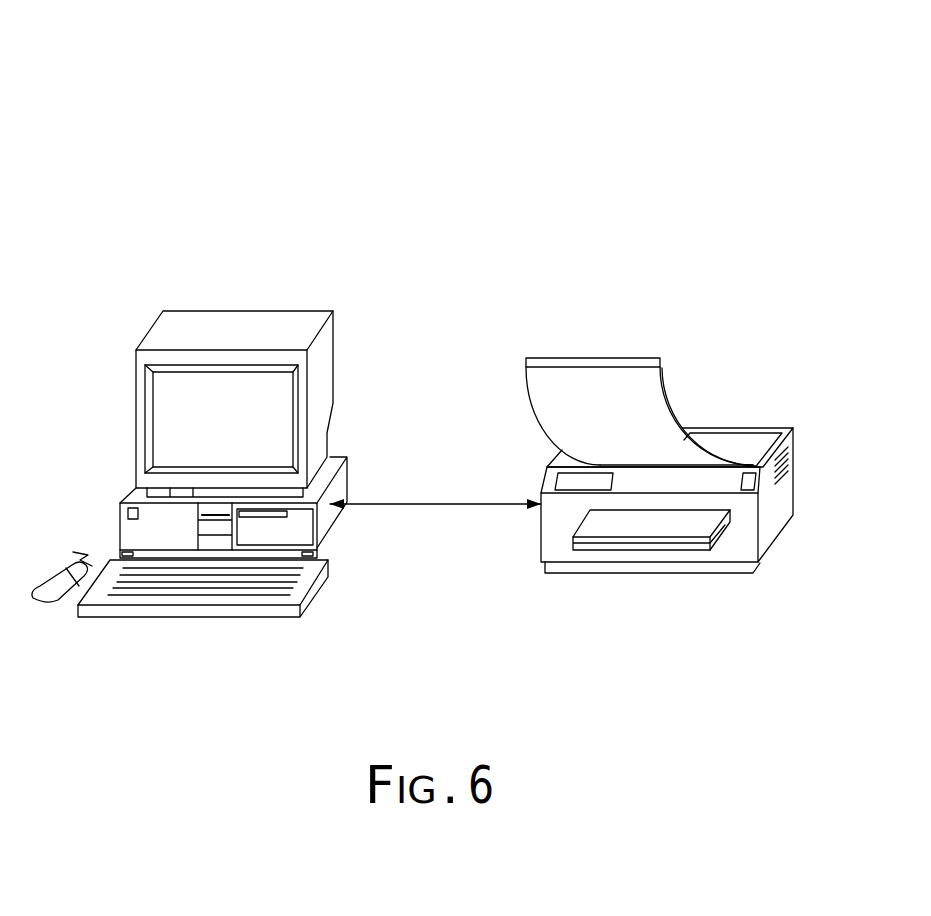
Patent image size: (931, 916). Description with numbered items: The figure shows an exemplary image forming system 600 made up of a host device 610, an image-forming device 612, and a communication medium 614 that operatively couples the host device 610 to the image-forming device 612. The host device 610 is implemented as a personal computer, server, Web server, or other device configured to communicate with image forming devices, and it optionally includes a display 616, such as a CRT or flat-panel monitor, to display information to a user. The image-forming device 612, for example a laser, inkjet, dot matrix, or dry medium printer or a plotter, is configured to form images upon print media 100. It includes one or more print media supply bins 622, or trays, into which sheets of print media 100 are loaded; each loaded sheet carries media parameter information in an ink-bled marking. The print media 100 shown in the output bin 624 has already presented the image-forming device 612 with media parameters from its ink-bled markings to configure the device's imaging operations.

The image forming system 600 is at (197, 68).
The host device 610 is at (120, 510).
The image-forming device 612 is at (654, 497).
The communication medium 614 is at (463, 504).
The display 616 is at (233, 327).
The print media 100 is at (578, 362).
The print media supply bin 622 is at (603, 543).
The output bin 624 is at (743, 447).